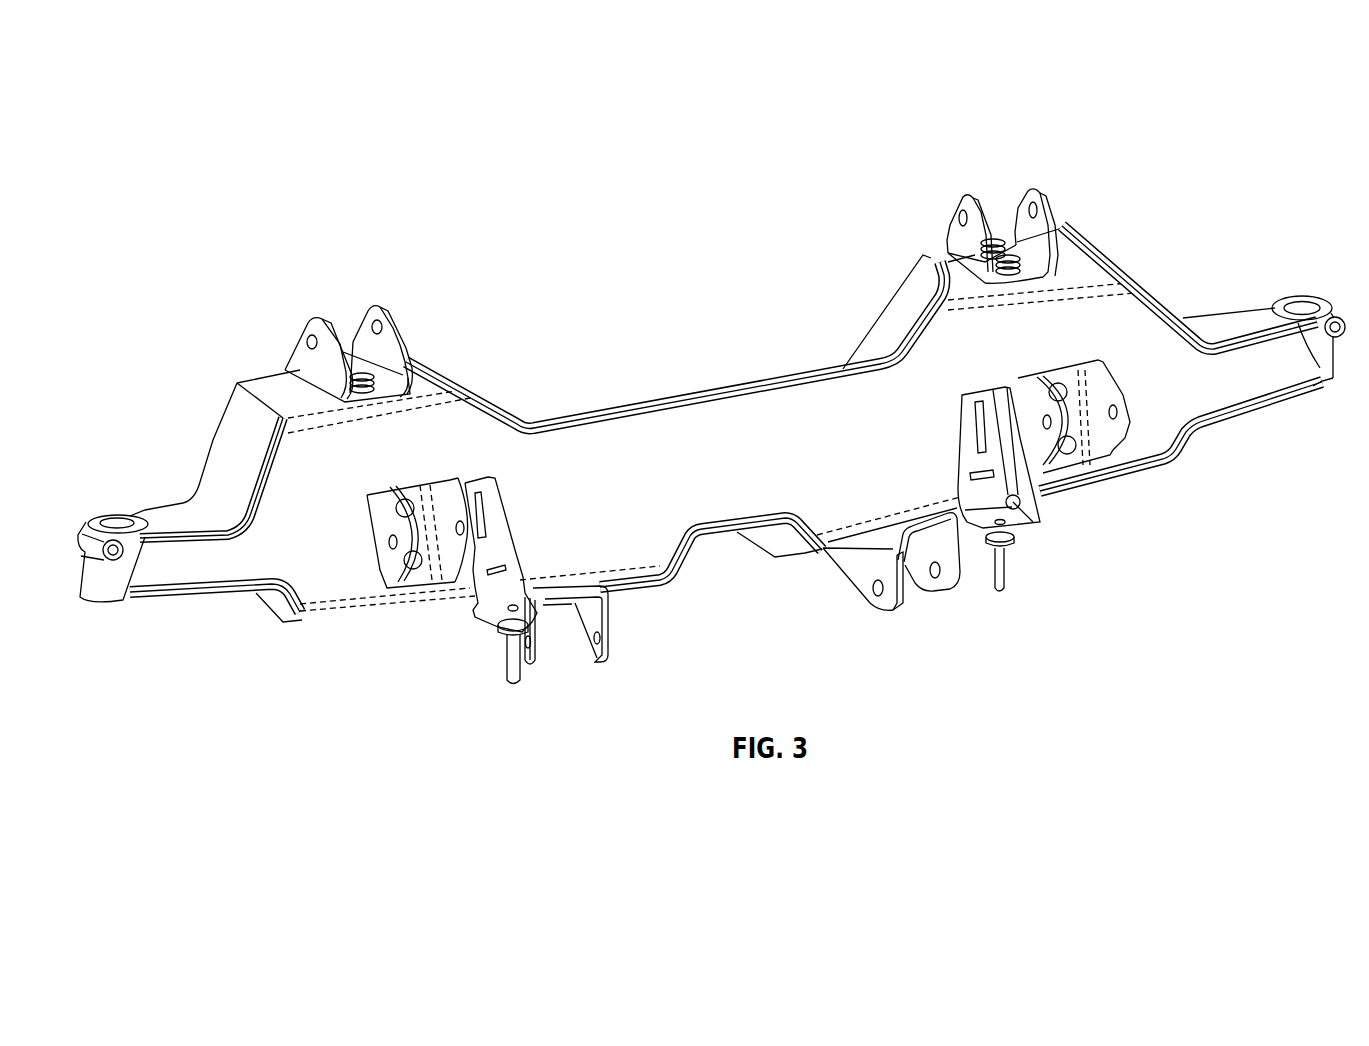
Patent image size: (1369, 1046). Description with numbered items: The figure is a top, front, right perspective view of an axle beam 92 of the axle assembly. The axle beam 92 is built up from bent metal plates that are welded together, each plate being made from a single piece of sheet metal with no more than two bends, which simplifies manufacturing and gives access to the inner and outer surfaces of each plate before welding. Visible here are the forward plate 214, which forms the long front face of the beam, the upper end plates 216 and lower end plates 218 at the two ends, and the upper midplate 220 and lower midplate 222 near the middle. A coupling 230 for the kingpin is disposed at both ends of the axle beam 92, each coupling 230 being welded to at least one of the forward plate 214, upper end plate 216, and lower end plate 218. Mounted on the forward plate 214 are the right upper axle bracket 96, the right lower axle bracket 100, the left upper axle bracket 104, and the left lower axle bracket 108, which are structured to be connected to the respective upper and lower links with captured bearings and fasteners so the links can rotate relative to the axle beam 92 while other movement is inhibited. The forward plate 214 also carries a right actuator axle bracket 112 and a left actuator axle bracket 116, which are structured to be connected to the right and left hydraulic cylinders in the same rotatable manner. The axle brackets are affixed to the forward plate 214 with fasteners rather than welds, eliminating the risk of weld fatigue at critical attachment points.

The axle beam 92 is at (733, 384).
The right upper axle bracket 96 is at (300, 346).
The right lower axle bracket 100 is at (608, 661).
The left upper axle bracket 104 is at (1040, 196).
The left lower axle bracket 108 is at (898, 605).
The right actuator axle bracket 112 is at (388, 566).
The left actuator axle bracket 116 is at (1107, 440).
The forward plate 214 is at (1217, 377).
The upper end plate 216 is at (183, 502).
The lower end plate 218 is at (280, 621).
The upper midplate 220 is at (897, 318).
The lower midplate 222 is at (793, 550).
The coupling 230 is at (88, 525).